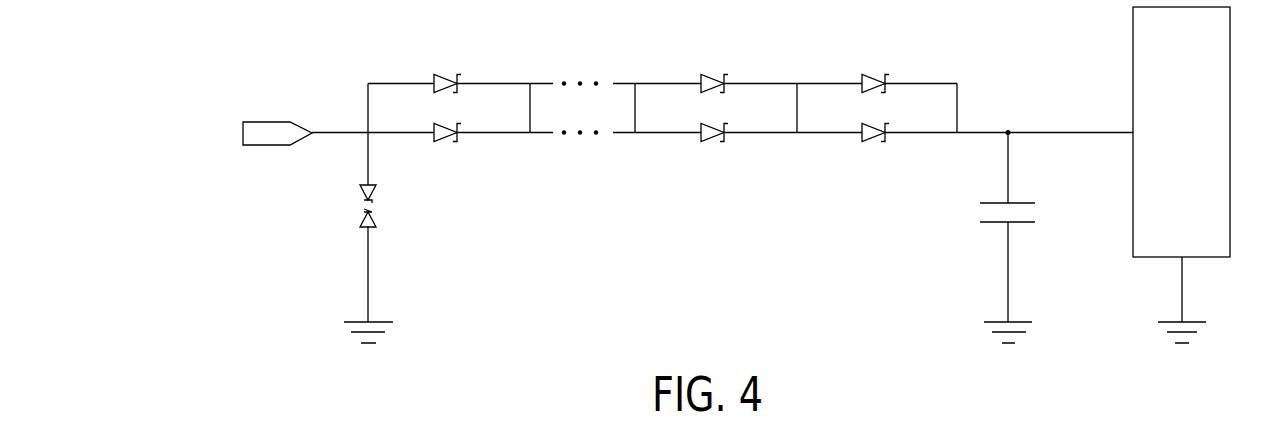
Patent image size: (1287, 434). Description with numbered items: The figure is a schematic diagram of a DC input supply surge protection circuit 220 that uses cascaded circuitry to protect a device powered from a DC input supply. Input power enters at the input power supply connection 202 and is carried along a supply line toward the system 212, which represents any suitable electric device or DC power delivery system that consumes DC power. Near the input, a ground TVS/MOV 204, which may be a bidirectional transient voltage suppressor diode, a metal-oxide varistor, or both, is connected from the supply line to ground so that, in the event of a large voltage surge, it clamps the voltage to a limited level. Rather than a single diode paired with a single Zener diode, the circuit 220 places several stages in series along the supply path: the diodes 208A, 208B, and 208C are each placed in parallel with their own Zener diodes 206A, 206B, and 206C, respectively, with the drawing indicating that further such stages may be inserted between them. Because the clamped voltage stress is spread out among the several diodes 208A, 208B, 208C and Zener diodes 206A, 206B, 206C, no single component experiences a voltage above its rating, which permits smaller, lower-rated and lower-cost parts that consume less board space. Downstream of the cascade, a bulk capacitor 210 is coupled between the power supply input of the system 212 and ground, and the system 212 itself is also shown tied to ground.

The DC input supply surge protection circuit 220 is at (195, 29).
The input power supply connection 202 is at (267, 121).
The ground TVS/MOV 204 is at (373, 207).
The Zener diode 206A is at (447, 77).
The Zener diode 206B is at (712, 77).
The Zener diode 206C is at (873, 77).
The diode 208A is at (447, 142).
The diode 208B is at (714, 142).
The diode 208C is at (875, 142).
The bulk capacitor 210 is at (1022, 203).
The system 212 is at (1232, 128).